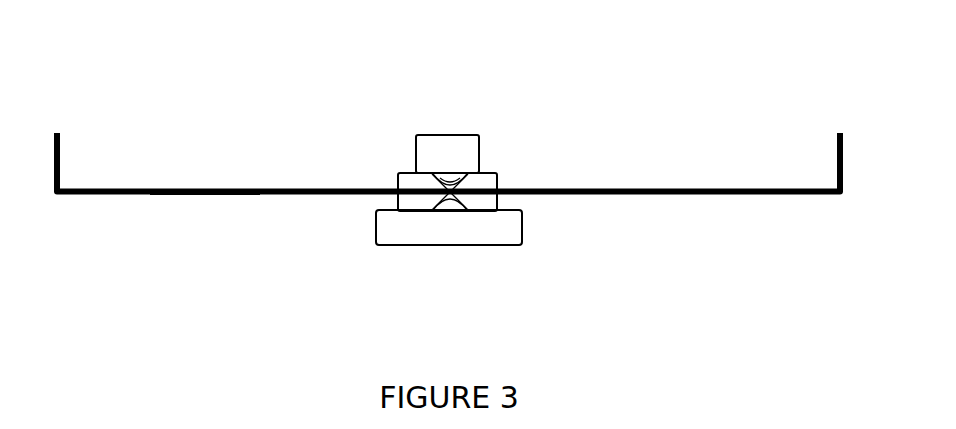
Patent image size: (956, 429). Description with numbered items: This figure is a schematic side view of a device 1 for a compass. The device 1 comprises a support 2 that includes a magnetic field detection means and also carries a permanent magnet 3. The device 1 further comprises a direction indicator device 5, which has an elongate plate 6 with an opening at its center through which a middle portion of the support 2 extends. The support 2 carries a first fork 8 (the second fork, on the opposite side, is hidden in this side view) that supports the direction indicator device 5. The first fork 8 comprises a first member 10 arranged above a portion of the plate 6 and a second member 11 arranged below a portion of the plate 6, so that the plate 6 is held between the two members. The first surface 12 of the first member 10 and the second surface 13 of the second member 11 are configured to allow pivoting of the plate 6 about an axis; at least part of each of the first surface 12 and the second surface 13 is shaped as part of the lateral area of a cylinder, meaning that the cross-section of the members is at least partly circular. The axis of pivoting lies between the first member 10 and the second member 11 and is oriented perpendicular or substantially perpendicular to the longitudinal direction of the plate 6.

The device 1 is at (603, 158).
The support 2 is at (481, 167).
The permanent magnet 3 is at (417, 223).
The direction indicator device 5 is at (250, 188).
The plate 6 is at (200, 197).
The first fork 8 is at (447, 187).
The first member 10 is at (452, 187).
The second member 11 is at (447, 200).
The first surface 12 is at (462, 183).
The second surface 13 is at (421, 184).